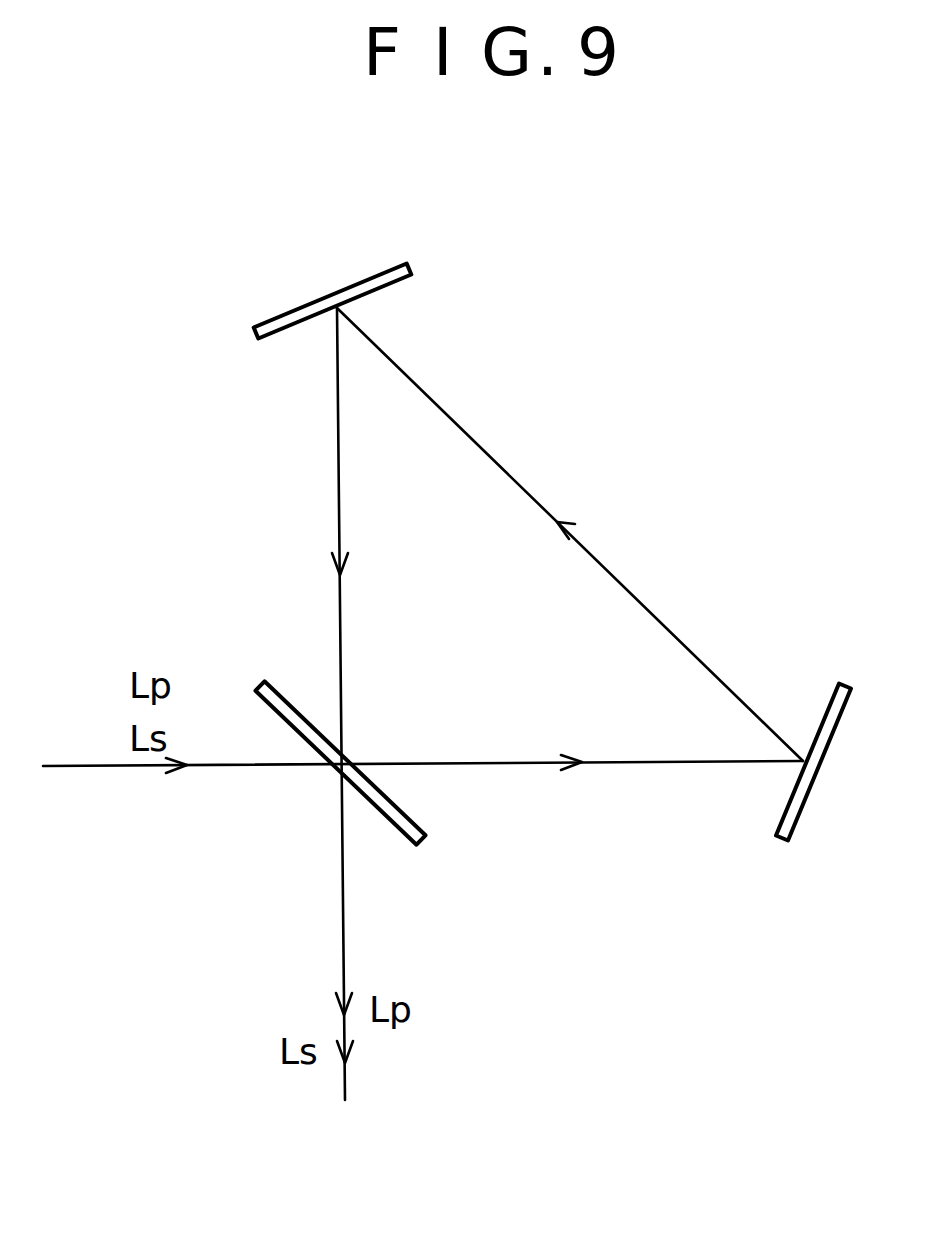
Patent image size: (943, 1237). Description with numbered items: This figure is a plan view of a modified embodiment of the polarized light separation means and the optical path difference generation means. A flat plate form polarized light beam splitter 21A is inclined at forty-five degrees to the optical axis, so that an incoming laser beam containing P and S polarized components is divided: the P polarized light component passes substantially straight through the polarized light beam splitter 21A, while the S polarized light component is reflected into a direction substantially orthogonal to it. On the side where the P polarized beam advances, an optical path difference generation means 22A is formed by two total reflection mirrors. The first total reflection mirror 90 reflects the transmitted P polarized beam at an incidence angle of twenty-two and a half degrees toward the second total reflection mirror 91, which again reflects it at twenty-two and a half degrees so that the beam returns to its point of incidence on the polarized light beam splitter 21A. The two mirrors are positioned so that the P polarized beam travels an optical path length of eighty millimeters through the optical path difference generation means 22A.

The second total reflection mirror 91 is at (387, 290).
The polarized light beam splitter 21A is at (397, 824).
The first total reflection mirror 90 is at (785, 803).
The optical path difference generation means 22A is at (683, 447).